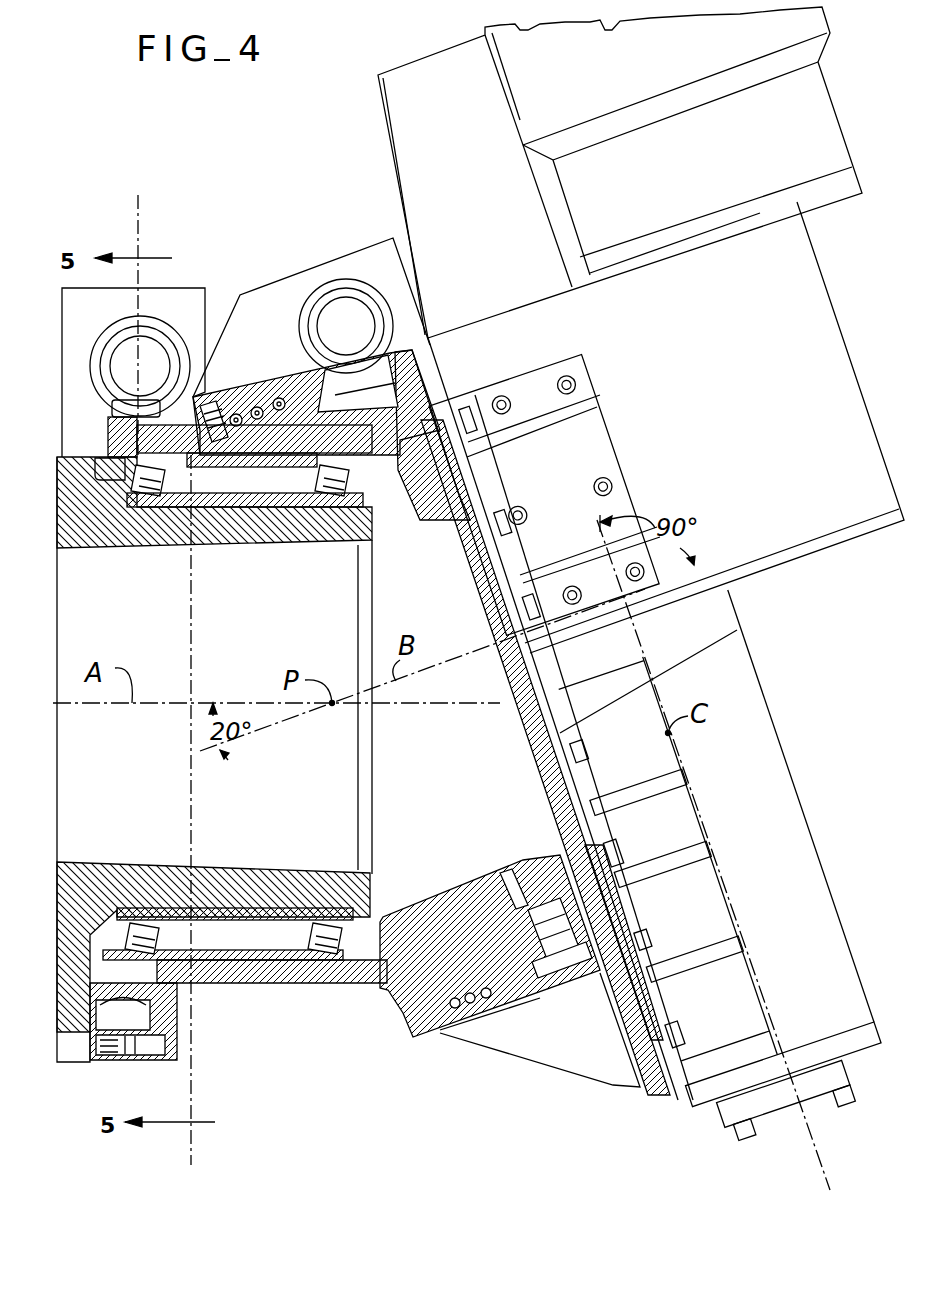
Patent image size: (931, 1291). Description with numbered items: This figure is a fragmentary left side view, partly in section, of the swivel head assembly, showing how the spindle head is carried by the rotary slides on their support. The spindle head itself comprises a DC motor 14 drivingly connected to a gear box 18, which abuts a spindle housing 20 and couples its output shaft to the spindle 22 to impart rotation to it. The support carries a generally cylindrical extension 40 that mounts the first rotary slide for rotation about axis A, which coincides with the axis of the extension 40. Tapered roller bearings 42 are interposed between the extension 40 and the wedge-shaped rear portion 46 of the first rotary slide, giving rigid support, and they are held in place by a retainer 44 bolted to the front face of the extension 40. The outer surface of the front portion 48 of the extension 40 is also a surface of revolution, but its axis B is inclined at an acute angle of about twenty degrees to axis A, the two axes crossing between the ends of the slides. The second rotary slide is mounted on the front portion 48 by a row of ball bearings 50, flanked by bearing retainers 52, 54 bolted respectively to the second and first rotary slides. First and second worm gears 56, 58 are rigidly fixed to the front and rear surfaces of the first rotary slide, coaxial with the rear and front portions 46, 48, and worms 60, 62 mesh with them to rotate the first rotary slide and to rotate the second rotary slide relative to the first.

The DC motor 14 is at (656, 66).
The gear box 18 is at (756, 350).
The spindle housing 20 is at (768, 776).
The spindle 22 is at (752, 1112).
The cylindrical extension 40 is at (131, 880).
The tapered roller bearings 42 is at (150, 475).
The retainer 44 is at (368, 545).
The rear portion 46 is at (178, 503).
The front portion 48 is at (425, 912).
The ball bearings 50 is at (252, 400).
The bearing retainer 52 is at (210, 423).
The bearing retainer 54 is at (308, 440).
The first worm gear 56 is at (112, 437).
The second worm gear 58 is at (556, 950).
The worm 60 is at (148, 365).
The worm 62 is at (346, 324).